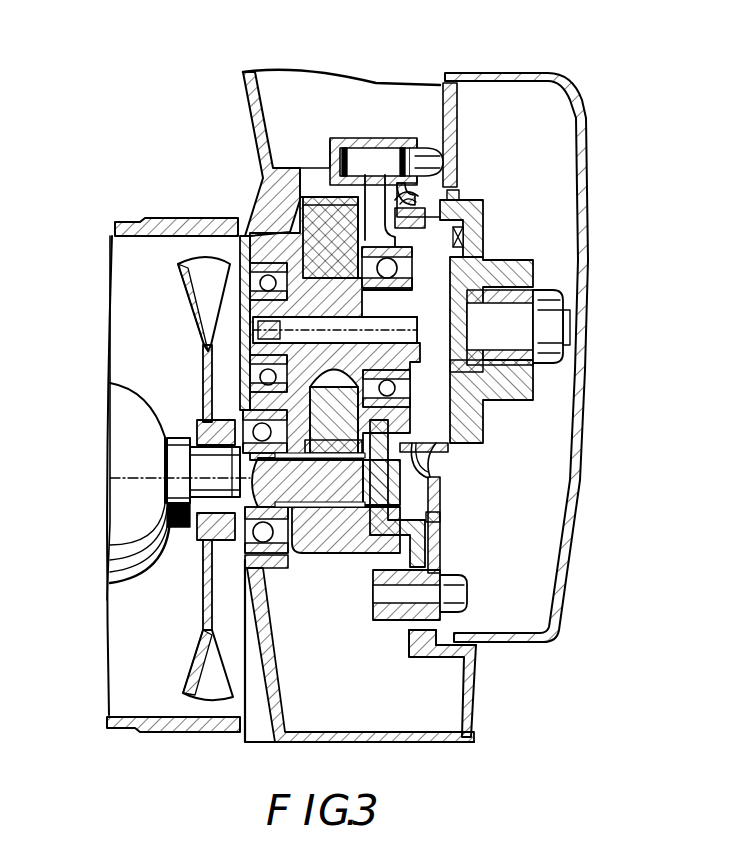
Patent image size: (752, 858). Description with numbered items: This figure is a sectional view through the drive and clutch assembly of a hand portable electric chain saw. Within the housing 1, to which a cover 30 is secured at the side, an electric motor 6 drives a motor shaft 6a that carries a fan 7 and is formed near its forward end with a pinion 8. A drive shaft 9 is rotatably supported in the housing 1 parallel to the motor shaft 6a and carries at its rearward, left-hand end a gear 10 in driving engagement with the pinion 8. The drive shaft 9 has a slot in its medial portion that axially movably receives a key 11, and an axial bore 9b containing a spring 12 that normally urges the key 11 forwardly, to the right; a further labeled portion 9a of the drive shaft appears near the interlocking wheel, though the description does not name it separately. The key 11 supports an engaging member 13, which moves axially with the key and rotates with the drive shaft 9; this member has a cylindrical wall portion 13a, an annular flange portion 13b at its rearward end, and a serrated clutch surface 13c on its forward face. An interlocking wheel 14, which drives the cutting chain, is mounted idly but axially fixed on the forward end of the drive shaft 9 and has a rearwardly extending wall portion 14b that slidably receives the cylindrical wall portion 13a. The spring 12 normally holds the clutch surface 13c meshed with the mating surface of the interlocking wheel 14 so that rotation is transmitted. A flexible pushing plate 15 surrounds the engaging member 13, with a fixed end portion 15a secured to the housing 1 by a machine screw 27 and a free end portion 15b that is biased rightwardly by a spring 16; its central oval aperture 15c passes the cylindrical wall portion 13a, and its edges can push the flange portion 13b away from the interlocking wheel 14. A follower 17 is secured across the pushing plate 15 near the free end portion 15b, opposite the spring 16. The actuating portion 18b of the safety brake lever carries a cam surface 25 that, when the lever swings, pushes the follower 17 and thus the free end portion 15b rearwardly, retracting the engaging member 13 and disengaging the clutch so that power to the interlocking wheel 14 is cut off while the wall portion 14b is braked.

The housing 1 is at (250, 113).
The electric motor 6 is at (113, 523).
The motor shaft 6a is at (163, 572).
The fan 7 is at (205, 602).
The pinion 8 is at (317, 487).
The drive shaft 9 is at (313, 283).
The washer 9a is at (463, 368).
The axial bore 9b is at (245, 258).
The gear 10 is at (340, 437).
The key 11 is at (418, 360).
The spring 12 is at (253, 333).
The engaging member 13 is at (447, 560).
The cylindrical wall portion 13a is at (440, 478).
The annular flange portion 13b is at (333, 165).
The serrated clutch surface 13c is at (448, 447).
The interlocking wheel 14 is at (497, 260).
The rearwardly extending wall portion 14b is at (460, 207).
The flexible pushing plate 15 is at (440, 519).
The fixed end portion 15a is at (460, 592).
The free end portion 15b is at (392, 140).
The oval aperture 15c is at (455, 197).
The spring 16 is at (347, 150).
The follower 17 is at (452, 178).
The actuating portion 18b is at (414, 188).
The cam surface 25 is at (425, 192).
The machine screw 27 is at (493, 640).
The cover 30 is at (588, 170).